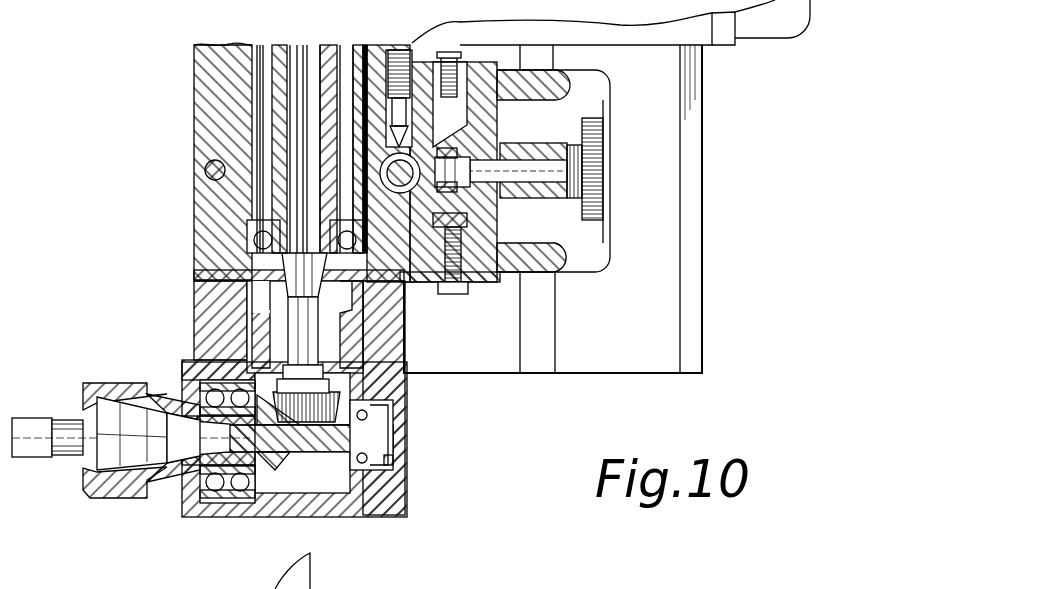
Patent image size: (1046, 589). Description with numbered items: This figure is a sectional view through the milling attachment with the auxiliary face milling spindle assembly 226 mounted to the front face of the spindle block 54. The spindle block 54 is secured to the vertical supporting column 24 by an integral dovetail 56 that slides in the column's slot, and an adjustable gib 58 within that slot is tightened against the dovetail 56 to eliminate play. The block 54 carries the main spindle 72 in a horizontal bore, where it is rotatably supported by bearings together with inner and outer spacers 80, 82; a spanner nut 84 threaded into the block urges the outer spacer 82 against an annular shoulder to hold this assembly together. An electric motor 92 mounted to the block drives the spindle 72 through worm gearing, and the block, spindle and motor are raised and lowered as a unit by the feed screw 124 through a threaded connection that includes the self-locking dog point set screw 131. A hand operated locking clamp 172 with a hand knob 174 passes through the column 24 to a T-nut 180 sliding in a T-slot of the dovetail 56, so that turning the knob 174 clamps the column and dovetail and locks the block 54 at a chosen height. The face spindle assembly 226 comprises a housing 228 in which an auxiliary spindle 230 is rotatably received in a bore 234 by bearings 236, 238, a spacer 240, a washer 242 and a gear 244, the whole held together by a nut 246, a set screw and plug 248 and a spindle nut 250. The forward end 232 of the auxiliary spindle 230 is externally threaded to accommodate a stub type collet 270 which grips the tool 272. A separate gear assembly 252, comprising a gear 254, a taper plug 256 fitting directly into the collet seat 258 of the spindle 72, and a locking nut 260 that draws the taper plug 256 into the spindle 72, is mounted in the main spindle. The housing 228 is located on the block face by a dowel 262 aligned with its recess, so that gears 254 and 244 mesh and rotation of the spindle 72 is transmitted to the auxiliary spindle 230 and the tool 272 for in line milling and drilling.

The supporting column 24 is at (508, 250).
The spindle block 54 is at (194, 150).
The dovetail 56 is at (482, 122).
The adjustable gib 58 is at (480, 283).
The spindle 72 is at (285, 47).
The inner spacer 80 is at (341, 50).
The outer spacer 82 is at (250, 92).
The spanner nut 84 is at (249, 246).
The electric motor 92 is at (758, 36).
The feed screw 124 is at (404, 194).
The self-locking dog point set screw 131 is at (392, 142).
The hand operated locking clamp 172 is at (560, 211).
The hand knob 174 is at (605, 176).
The T-nut 180 is at (458, 238).
The auxiliary face milling spindle assembly 226 is at (414, 502).
The housing 228 is at (408, 392).
The auxiliary spindle 230 is at (164, 512).
The forward end 232 is at (97, 487).
The bore 234 is at (290, 505).
The bearing 236 is at (357, 497).
The bearing 238 is at (225, 505).
The spacer 240 is at (302, 472).
The washer 242 is at (258, 505).
The gear 244 is at (250, 378).
The nut 246 is at (408, 415).
The set screw and plug 248 is at (395, 462).
The spindle nut 250 is at (183, 390).
The gear assembly 252 is at (440, 277).
The gear 254 is at (372, 398).
The taper plug 256 is at (392, 239).
The collet seat 258 is at (270, 312).
The locking nut 260 is at (402, 318).
The dowel 262 is at (353, 588).
The collet 270 is at (185, 392).
The tool 272 is at (45, 420).